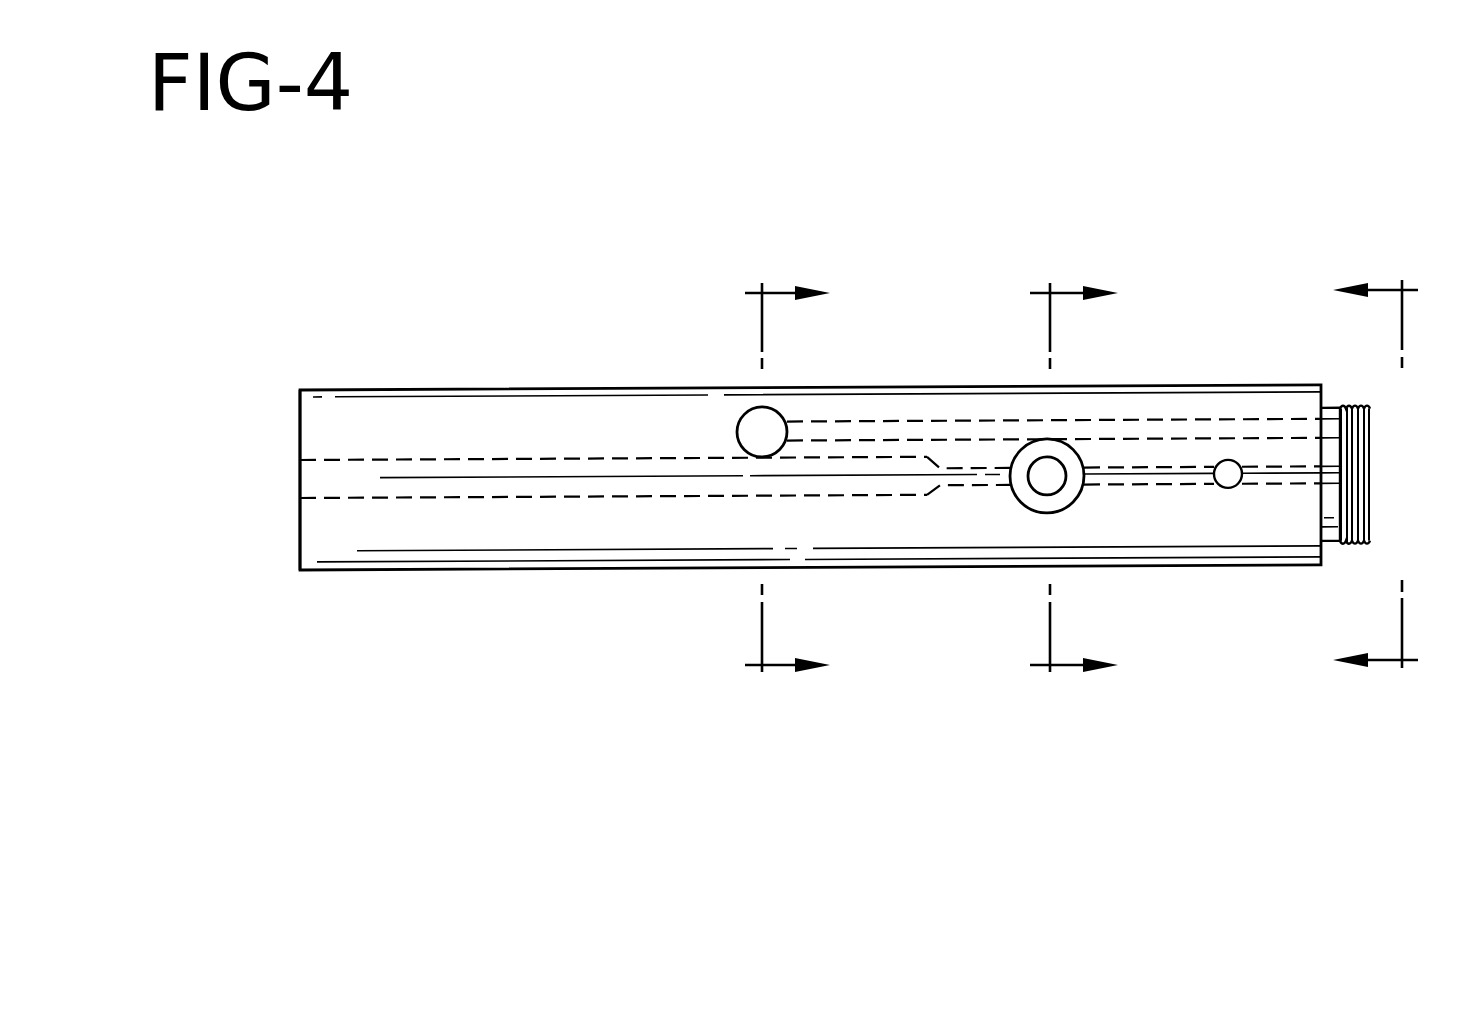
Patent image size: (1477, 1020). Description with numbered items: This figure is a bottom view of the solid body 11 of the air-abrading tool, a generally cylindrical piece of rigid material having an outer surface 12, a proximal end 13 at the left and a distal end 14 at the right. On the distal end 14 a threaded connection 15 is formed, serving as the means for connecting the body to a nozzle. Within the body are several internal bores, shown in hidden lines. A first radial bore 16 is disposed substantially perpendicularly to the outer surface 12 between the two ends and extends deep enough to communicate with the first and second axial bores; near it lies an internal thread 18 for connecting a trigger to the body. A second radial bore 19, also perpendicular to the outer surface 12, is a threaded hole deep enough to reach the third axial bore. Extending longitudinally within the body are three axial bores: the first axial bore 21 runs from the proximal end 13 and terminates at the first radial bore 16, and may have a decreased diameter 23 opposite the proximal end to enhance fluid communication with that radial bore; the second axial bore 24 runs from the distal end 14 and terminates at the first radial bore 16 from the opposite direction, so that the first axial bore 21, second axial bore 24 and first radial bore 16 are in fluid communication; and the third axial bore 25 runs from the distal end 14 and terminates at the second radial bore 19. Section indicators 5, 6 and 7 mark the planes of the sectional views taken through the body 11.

The section line 5- 5 is at (1388, 476).
The section line 6- 6 is at (1060, 480).
The section line 7- 7 is at (772, 480).
The solid body 11 is at (517, 415).
The outer surface 12 is at (505, 572).
The proximal end 13 is at (299, 542).
The distal end 14 is at (1370, 500).
The threaded connection 15 is at (1353, 408).
The first radial bore 16 is at (1031, 496).
The internal thread 18 is at (1228, 488).
The second radial bore 19 is at (754, 424).
The first axial bore 21 is at (356, 462).
The decreased diameter 23 is at (953, 468).
The second axial bore 24 is at (1163, 485).
The third axial bore 25 is at (1204, 420).